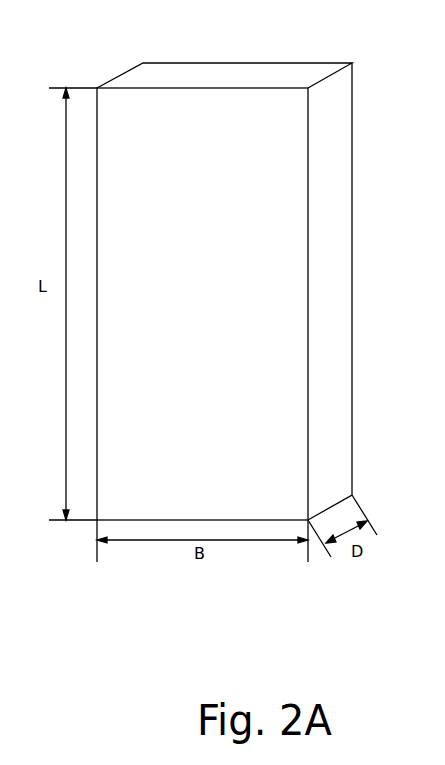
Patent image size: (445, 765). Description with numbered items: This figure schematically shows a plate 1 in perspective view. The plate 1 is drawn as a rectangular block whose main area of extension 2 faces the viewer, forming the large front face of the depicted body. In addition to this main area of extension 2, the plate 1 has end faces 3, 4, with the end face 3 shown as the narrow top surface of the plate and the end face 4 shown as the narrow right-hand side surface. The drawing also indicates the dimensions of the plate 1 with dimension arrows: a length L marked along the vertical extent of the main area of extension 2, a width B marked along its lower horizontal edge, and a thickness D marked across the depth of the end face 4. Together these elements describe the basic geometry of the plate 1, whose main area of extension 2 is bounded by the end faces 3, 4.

The plate 1 is at (221, 263).
The main area of extension 2 is at (223, 299).
The end face 3 is at (204, 70).
The end face 4 is at (338, 350).